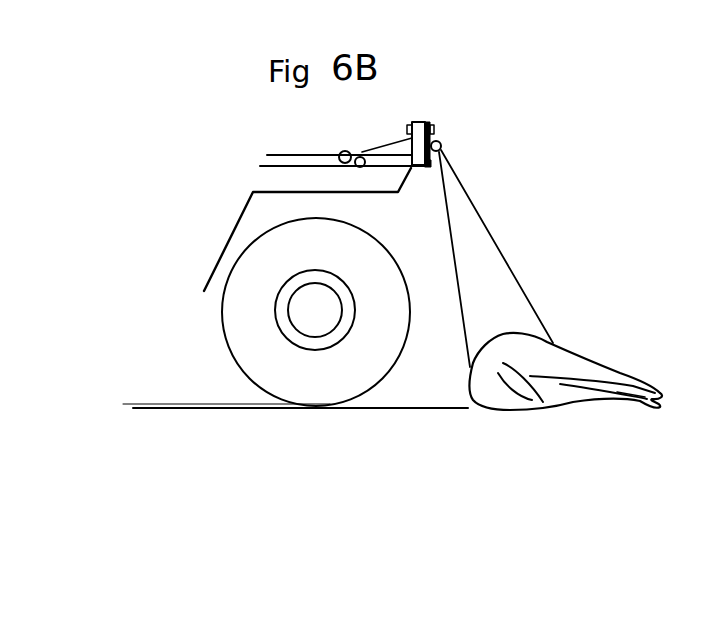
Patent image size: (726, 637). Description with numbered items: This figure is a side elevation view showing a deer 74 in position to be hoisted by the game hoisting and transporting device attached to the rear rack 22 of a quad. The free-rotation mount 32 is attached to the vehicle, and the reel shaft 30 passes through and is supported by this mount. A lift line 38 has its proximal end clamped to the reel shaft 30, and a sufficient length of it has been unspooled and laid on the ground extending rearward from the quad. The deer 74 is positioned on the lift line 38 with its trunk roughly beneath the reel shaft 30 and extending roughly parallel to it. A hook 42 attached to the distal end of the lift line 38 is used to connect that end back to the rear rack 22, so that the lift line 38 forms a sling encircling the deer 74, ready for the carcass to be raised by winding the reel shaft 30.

The rear rack 22 is at (278, 163).
The reel shaft 30 is at (445, 142).
The free-rotation mount 32 is at (440, 143).
The lift lines 38 is at (457, 287).
The hooks 42 is at (352, 148).
The deer 74 is at (492, 393).